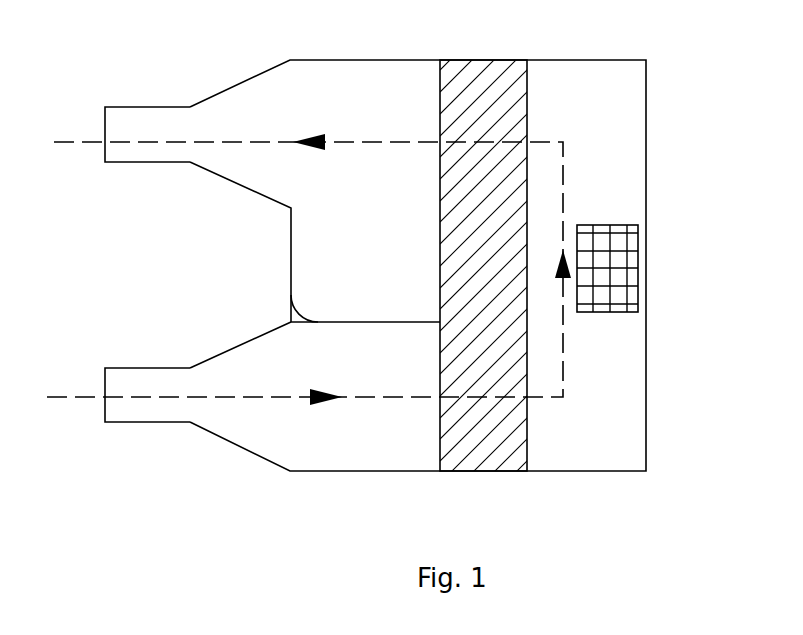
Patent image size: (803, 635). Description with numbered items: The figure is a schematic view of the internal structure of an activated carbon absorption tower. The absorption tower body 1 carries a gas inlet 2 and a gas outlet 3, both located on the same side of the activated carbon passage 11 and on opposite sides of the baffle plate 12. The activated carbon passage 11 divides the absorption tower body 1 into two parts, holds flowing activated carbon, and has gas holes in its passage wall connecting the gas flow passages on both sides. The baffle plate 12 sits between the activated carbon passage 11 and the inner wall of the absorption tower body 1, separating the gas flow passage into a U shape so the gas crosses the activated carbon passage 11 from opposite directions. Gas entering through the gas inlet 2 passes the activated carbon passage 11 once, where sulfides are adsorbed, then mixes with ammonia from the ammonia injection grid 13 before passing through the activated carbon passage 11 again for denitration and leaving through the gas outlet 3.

The absorption tower body 1 is at (646, 118).
The gas inlet 2 is at (127, 410).
The gas outlet 3 is at (122, 113).
The activated carbon passage 11 is at (485, 67).
The baffle plate 12 is at (291, 298).
The ammonia injection grid 13 is at (612, 268).